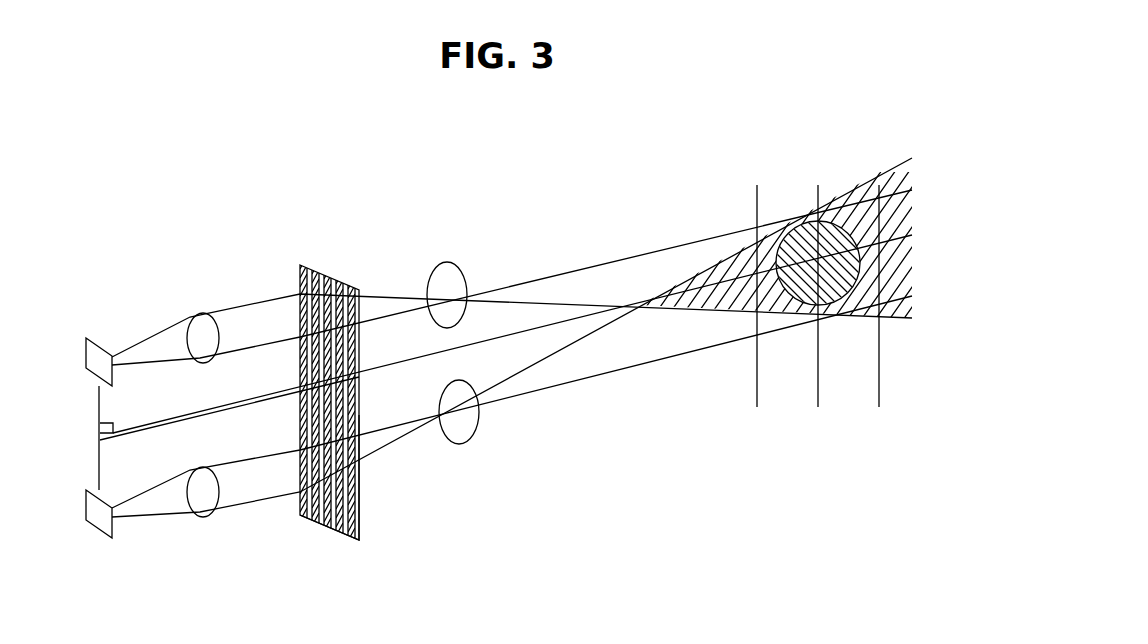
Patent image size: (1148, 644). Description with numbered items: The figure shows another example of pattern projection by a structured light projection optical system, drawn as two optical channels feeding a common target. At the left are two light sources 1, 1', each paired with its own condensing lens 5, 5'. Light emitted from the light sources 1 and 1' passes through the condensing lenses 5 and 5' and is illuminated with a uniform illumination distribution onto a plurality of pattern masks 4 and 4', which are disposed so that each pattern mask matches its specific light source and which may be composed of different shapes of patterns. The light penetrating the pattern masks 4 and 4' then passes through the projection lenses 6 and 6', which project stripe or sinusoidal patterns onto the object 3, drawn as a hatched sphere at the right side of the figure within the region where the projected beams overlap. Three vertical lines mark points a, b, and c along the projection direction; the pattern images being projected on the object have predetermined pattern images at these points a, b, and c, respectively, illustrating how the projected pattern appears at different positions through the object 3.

The light source 1 is at (98, 338).
The light source 1' is at (99, 549).
The object 3 is at (805, 232).
The pattern mask 4 is at (316, 380).
The pattern mask 4' is at (321, 499).
The condensing lens 5 is at (195, 310).
The condensing lens 5' is at (205, 523).
The projection lens 6 is at (441, 265).
The projection lens 6' is at (463, 444).
The point a is at (757, 313).
The point b is at (817, 313).
The point c is at (878, 313).